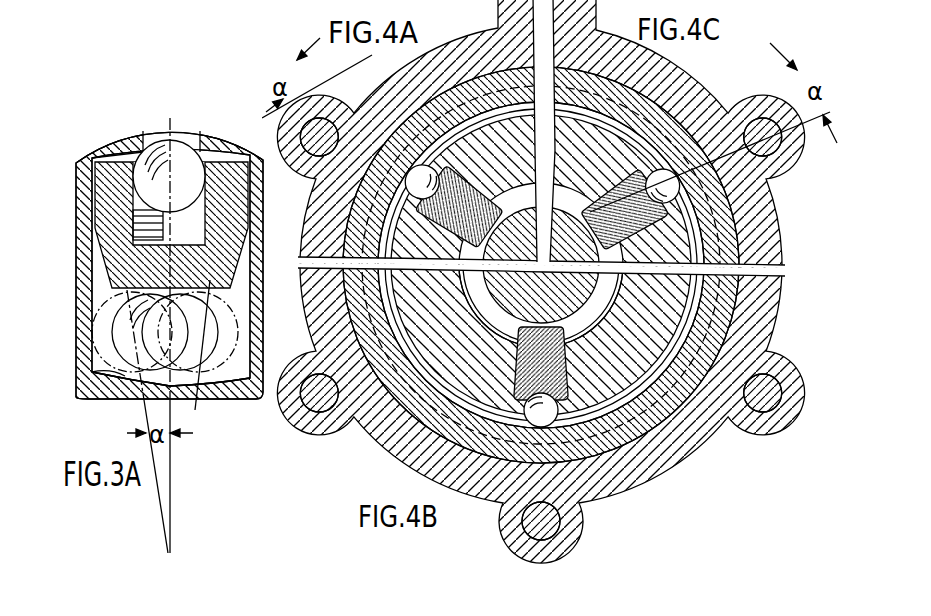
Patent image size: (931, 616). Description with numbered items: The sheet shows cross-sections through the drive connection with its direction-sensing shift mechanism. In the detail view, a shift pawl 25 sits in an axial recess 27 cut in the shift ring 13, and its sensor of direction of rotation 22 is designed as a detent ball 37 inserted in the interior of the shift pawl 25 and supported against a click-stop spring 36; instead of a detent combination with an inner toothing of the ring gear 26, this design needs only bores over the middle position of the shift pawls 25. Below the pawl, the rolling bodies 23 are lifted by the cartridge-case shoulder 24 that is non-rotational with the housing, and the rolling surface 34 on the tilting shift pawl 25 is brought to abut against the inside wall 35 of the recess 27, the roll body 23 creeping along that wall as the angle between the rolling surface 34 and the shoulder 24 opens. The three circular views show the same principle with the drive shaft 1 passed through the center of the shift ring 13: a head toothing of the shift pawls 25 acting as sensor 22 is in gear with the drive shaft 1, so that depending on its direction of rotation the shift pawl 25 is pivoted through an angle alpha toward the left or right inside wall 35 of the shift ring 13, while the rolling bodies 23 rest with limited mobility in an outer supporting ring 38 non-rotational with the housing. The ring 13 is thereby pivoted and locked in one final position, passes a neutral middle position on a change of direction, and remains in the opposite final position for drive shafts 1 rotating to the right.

In FIG. 4B, the drive shaft 1 is at (700, 304).
In FIG. 3A, the shift ring 13 is at (83, 187).
In FIG. 4B, the shift ring 13 is at (677, 400).
In FIG. 3A, the sensor of direction of rotation 22 is at (210, 125).
In FIG. 4B, the sensor of direction of rotation 22 is at (580, 330).
In FIG. 3A, the rolling body 23 is at (150, 343).
In FIG. 4B, the rolling body 23 is at (583, 453).
In FIG. 3A, the cartridge-case shoulder 24 is at (222, 397).
In FIG. 3A, the shift pawl 25 is at (105, 168).
In FIG. 4A, the shift pawl 25 is at (430, 232).
In FIG. 4C, the shift pawl 25 is at (700, 236).
In FIG. 4B, the shift pawl 25 is at (384, 449).
In FIG. 3A, the ring gear 26 is at (132, 150).
In FIG. 3A, the axial recess 27 is at (118, 300).
In FIG. 4B, the axial recess 27 is at (513, 345).
In FIG. 3A, the rolling surface 34 is at (95, 312).
In FIG. 4B, the rolling surface 34 is at (603, 440).
In FIG. 3A, the inside wall 35 is at (93, 372).
In FIG. 3A, the click-stop spring 36 is at (140, 235).
In FIG. 3A, the ball 37 is at (155, 138).
In FIG. 4B, the outer supporting ring 38 is at (550, 428).